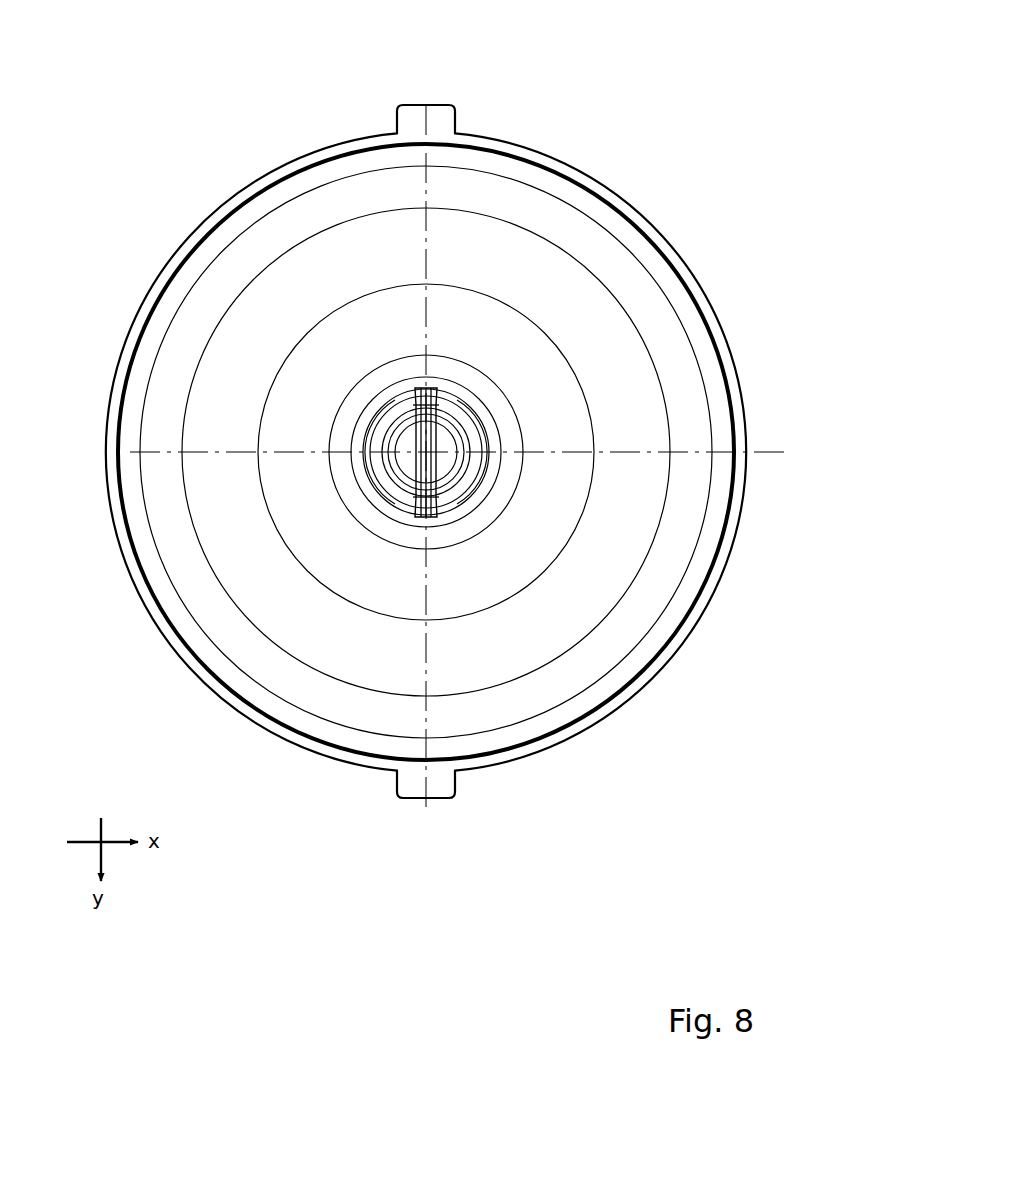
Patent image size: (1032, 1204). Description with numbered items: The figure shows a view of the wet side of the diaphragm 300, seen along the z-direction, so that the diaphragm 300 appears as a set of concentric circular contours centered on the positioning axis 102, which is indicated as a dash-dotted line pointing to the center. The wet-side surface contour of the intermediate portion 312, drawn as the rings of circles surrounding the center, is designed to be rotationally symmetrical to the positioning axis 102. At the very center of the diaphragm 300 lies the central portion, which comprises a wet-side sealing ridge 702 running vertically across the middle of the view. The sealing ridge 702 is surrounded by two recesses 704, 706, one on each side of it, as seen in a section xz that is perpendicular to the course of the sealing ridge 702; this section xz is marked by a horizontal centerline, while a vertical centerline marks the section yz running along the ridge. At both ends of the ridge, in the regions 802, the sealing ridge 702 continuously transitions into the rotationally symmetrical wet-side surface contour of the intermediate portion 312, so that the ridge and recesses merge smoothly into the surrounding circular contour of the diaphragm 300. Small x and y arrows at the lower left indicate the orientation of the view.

The diaphragm 300 is at (691, 111).
The positioning axis 102 is at (460, 440).
The intermediate portion 312 is at (443, 359).
The sealing ridge 702 is at (430, 442).
The recess 704 is at (395, 459).
The recess 706 is at (457, 459).
The region 802 is at (416, 382).
The section xz is at (130, 450).
The section yz is at (430, 192).